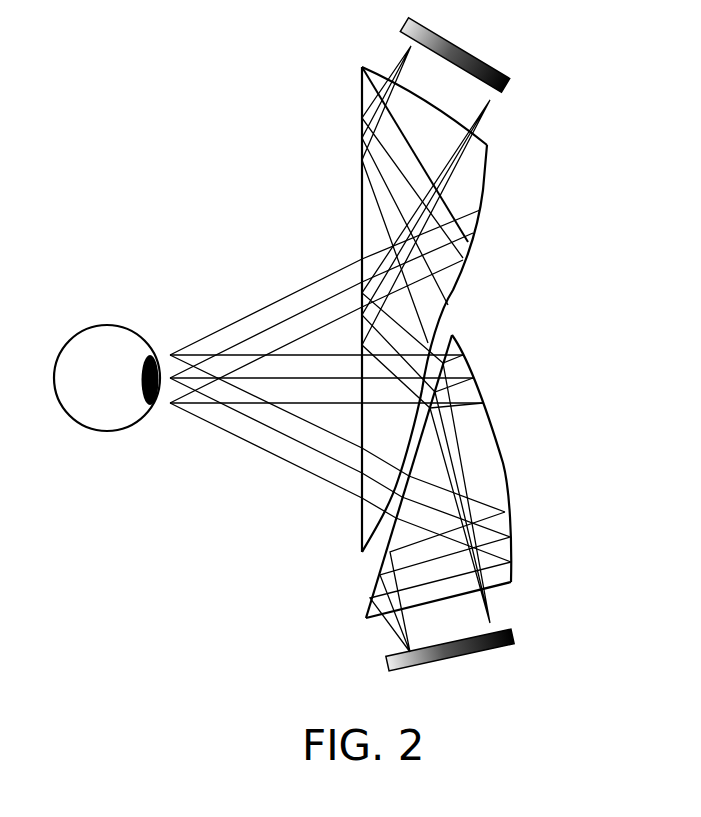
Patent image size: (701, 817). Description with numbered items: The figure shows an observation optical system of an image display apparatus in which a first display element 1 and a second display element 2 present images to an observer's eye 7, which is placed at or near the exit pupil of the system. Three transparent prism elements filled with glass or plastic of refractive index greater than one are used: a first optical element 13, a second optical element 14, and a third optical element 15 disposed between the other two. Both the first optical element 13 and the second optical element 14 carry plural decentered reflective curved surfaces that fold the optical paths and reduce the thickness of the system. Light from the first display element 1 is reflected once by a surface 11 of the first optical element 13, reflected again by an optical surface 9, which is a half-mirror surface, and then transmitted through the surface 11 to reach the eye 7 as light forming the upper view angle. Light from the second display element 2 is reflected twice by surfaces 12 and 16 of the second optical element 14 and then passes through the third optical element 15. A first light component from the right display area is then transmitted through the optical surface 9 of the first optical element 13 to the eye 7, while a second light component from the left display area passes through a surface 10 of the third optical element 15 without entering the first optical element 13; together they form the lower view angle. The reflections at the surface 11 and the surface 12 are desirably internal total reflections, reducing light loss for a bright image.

The first display element 1 is at (474, 61).
The second display element 2 is at (474, 656).
The observer's eye 7 is at (118, 415).
The optical surface 9 is at (393, 299).
The surface 10 is at (307, 475).
The surface 11 is at (362, 187).
The surface 12 is at (372, 588).
The first optical element 13 is at (470, 183).
The second optical element 14 is at (421, 507).
The third optical element 15 is at (371, 514).
The surface 16 is at (495, 438).